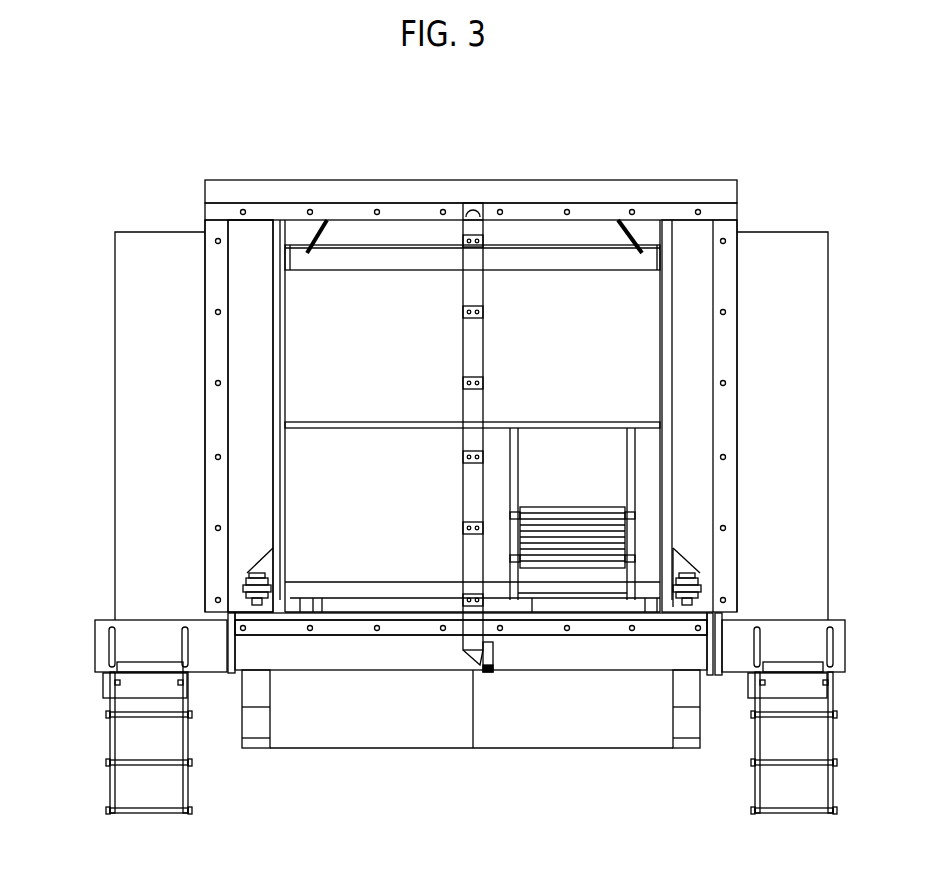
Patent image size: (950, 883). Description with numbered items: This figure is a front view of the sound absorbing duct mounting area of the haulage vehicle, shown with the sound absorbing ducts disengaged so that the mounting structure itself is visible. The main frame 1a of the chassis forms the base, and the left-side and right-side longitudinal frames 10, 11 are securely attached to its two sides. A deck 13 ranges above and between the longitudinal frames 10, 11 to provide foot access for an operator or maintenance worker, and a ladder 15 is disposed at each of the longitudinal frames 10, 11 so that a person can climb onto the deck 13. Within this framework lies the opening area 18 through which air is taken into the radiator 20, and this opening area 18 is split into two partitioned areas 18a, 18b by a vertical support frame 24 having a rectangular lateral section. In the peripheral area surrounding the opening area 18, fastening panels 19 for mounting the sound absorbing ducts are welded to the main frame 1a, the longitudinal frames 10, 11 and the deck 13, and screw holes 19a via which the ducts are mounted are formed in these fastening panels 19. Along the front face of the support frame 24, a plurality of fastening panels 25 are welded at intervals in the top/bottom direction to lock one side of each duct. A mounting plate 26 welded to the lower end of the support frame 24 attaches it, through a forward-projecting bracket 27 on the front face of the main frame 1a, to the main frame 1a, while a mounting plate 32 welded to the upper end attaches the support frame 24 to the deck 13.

The main frame 1a is at (330, 665).
The left-side longitudinal frame 10 is at (795, 460).
The right-side longitudinal frame 11 is at (150, 426).
The deck 13 is at (557, 196).
The ladder 15 is at (188, 793).
The opening area 18 is at (256, 218).
The partitioned area 18a is at (695, 255).
The partitioned area 18b is at (243, 280).
The fastening panel 19 is at (340, 207).
The screw hole 19a is at (632, 209).
The radiator 20 is at (388, 328).
The support frame 24 is at (480, 333).
The fastening panel 25 is at (465, 457).
The mounting plate 26 is at (472, 663).
The bracket 27 is at (488, 672).
The mounting plate 32 is at (478, 203).